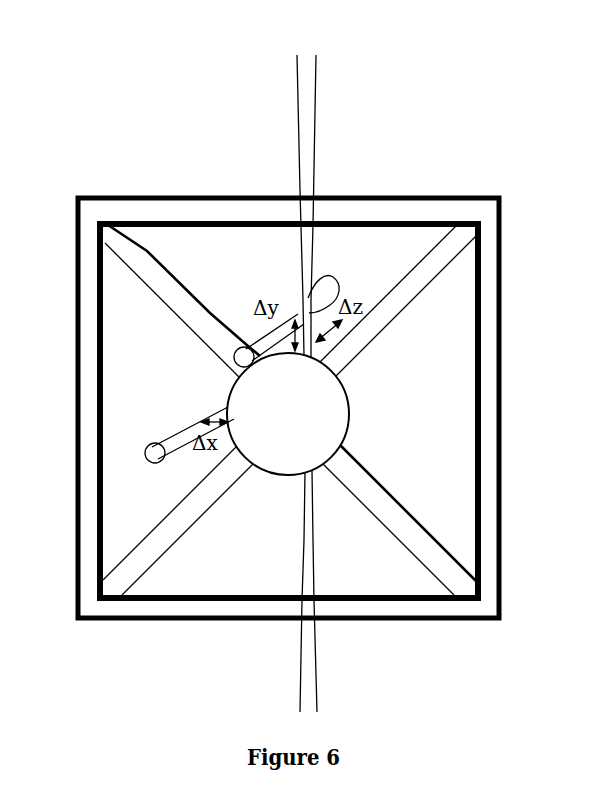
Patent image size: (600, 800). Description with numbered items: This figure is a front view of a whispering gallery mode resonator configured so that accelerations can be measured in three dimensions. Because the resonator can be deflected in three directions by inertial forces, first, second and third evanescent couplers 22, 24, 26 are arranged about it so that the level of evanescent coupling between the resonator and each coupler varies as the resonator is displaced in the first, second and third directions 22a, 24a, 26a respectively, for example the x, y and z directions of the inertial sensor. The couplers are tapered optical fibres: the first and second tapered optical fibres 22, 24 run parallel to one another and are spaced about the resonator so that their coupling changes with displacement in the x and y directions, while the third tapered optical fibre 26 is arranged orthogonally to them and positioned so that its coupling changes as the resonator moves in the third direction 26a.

The third evanescent coupler 26 is at (305, 93).
The third direction 26a is at (362, 340).
The second evanescent coupler 24 is at (332, 275).
The second direction 24a is at (294, 312).
The first evanescent coupler 22 is at (150, 464).
The first direction 22a is at (203, 414).